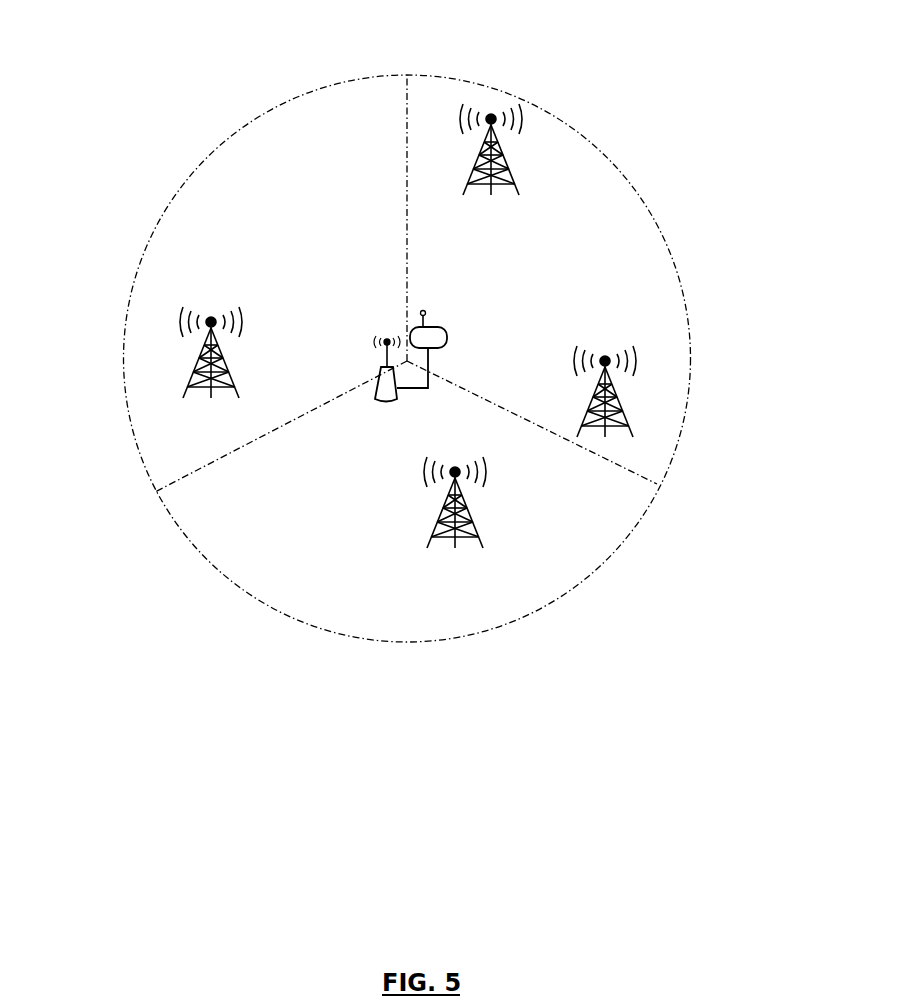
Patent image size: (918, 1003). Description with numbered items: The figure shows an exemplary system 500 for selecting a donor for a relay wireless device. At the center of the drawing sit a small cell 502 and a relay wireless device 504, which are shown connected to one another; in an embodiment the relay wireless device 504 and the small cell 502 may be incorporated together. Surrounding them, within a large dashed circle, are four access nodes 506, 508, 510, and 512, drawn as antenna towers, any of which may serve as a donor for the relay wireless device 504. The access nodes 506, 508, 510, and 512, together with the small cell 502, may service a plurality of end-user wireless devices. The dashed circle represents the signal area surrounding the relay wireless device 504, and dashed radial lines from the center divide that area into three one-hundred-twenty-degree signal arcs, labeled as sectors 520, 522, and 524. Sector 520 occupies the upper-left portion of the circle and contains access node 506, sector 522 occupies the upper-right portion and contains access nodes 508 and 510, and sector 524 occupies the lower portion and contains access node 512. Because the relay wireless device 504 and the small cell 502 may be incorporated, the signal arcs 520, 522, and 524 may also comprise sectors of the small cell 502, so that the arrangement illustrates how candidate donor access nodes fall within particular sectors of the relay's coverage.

The system 500 is at (733, 34).
The small cell 502 is at (384, 364).
The relay wireless device 504 is at (444, 329).
The access node 506 is at (228, 367).
The access node 508 is at (509, 163).
The access node 510 is at (623, 405).
The access node 512 is at (472, 517).
The sector 520 is at (160, 200).
The sector 522 is at (578, 121).
The sector 524 is at (582, 593).